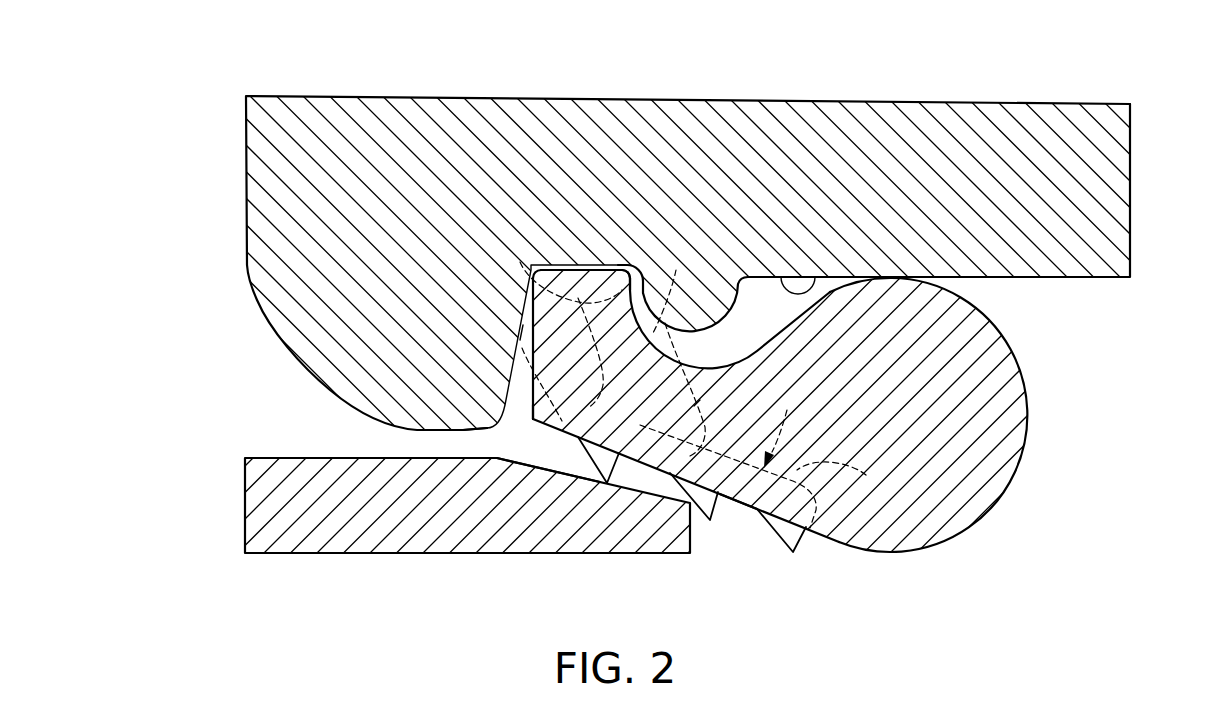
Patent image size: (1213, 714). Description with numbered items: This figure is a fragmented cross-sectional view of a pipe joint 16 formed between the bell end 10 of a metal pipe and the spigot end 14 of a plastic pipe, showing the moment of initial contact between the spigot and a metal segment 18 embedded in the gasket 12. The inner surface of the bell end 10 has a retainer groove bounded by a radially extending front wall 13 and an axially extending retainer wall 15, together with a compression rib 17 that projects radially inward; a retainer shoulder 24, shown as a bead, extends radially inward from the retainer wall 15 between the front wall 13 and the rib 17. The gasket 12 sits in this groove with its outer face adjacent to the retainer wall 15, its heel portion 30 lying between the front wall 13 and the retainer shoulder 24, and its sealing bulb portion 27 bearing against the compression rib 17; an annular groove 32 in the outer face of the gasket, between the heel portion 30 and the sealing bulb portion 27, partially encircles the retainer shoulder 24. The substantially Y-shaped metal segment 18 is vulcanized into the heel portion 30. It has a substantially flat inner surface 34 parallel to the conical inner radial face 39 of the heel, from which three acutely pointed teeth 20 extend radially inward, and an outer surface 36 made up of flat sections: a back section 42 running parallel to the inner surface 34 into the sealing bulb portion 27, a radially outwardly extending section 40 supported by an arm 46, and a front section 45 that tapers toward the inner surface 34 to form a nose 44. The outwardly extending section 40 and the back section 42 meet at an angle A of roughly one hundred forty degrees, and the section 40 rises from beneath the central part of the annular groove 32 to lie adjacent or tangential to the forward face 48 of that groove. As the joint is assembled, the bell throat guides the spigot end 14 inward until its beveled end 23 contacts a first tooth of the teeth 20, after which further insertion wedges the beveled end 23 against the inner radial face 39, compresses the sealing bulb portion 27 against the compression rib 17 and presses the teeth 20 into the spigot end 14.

The bell end 10 is at (267, 329).
The gasket 12 is at (1035, 493).
The front wall 13 is at (523, 331).
The spigot end 14 is at (405, 572).
The retainer wall 15 is at (580, 278).
The pipe joint 16 is at (205, 219).
The compression rib 17 is at (812, 272).
The metal segment 18 is at (640, 434).
The teeth 20 is at (604, 470).
The beveled end 23 is at (559, 467).
The retainer shoulder 24 is at (698, 300).
The sealing bulb portion 27 is at (1032, 398).
The heel portion 30 is at (478, 280).
The annular groove 32 is at (723, 346).
The inner surface 34 is at (740, 505).
The outer surface 36 is at (787, 410).
The inner radial face 39 is at (528, 427).
The radially outwardly extending section 40 is at (676, 270).
The back section 42 is at (858, 474).
The nose 44 is at (527, 425).
The front section 45 is at (530, 343).
The arm 46 is at (520, 262).
The forward face 48 is at (633, 265).
The angle A is at (700, 400).